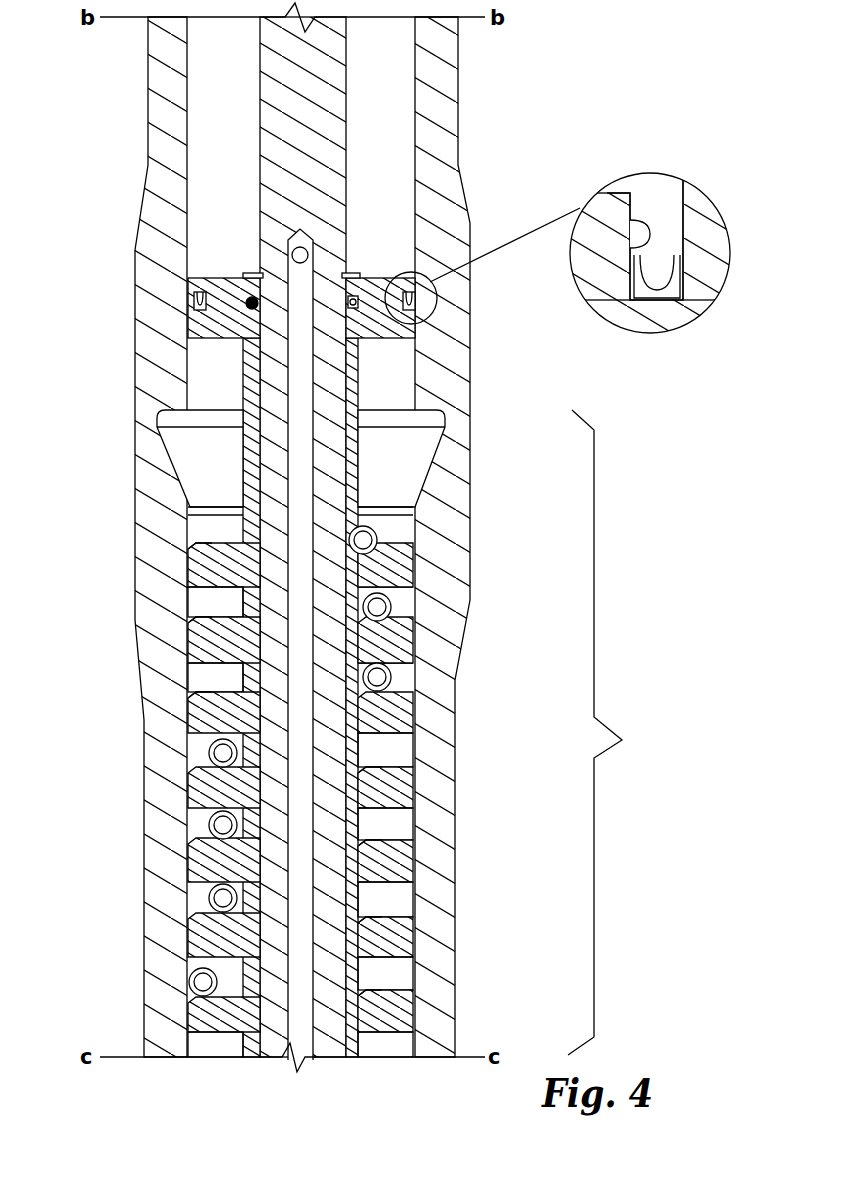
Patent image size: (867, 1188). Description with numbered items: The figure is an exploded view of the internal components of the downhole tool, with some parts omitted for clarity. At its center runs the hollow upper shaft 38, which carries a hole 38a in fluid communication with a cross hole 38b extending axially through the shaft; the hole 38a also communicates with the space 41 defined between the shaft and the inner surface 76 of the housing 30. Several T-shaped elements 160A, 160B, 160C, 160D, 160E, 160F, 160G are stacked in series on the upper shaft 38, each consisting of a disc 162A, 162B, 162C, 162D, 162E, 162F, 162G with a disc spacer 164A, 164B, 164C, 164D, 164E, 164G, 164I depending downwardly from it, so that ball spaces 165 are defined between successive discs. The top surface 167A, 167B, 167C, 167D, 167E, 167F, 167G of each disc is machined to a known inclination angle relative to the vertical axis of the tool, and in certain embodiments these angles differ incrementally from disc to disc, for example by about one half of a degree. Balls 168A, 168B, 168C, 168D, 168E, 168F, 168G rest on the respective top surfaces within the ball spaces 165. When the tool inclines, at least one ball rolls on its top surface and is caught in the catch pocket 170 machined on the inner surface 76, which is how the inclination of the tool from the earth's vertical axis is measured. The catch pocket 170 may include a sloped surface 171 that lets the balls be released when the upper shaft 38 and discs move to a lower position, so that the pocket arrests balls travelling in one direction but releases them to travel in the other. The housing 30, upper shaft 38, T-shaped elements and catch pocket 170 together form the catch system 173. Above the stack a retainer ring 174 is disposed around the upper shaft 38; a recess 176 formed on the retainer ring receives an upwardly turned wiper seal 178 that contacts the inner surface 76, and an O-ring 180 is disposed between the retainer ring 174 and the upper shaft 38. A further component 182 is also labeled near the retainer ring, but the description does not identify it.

The housing 30 is at (470, 487).
The upper shaft 38 is at (333, 178).
The hole 38a is at (318, 256).
The cross hole 38b is at (300, 400).
The space 41 is at (392, 89).
The inner surface 76 is at (190, 157).
The ball space 165 is at (400, 511).
The catch pocket 170 is at (432, 410).
The sloped surface 171 is at (165, 480).
The catch system 173 is at (617, 732).
The retainer ring 174 is at (440, 368).
The recess 176 is at (592, 300).
The upwardly turned wiper seal 178 is at (192, 306).
The O-ring 180 is at (228, 340).
The o-ring 182 is at (248, 298).
The T-shaped element 160A is at (395, 1015).
The T-shaped element 160B is at (395, 945).
The T-shaped element 160C is at (395, 860).
The T-shaped element 160D is at (395, 787).
The T-shaped element 160E is at (395, 712).
The T-shaped element 160F is at (395, 640).
The T-shaped element 160G is at (395, 565).
The disc 162A is at (420, 1005).
The disc 162B is at (420, 930).
The disc 162C is at (210, 858).
The disc 162D is at (210, 785).
The disc 162E is at (210, 712).
The disc 162F is at (210, 640).
The disc 162G is at (210, 565).
The disc spacer 164A is at (395, 1045).
The disc spacer 164B is at (395, 975).
The disc spacer 164C is at (395, 895).
The disc spacer 164D is at (395, 820).
The disc spacer 164E is at (395, 750).
The disc spacer 164G is at (215, 600).
The disc spacer 164I is at (215, 675).
The top surface 167A is at (395, 990).
The top surface 167B is at (395, 917).
The top surface 167C is at (395, 840).
The top surface 167D is at (395, 768).
The top surface 167E is at (232, 695).
The top surface 167F is at (232, 620).
The top surface 167G is at (232, 545).
The ball 168A is at (188, 980).
The ball 168B is at (208, 897).
The ball 168C is at (208, 822).
The ball 168D is at (208, 750).
The ball 168E is at (392, 677).
The ball 168F is at (392, 607).
The ball 168G is at (380, 540).